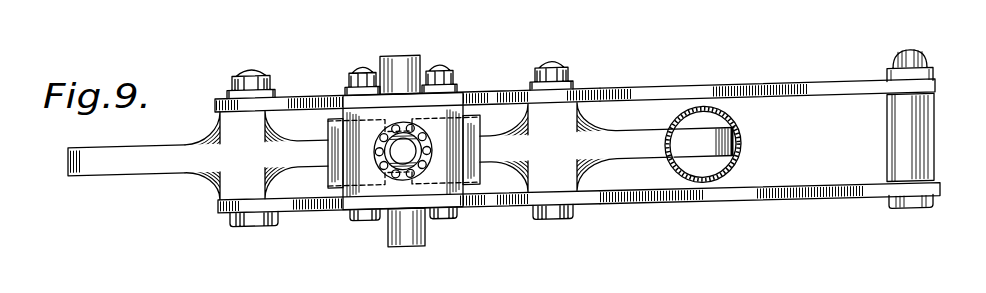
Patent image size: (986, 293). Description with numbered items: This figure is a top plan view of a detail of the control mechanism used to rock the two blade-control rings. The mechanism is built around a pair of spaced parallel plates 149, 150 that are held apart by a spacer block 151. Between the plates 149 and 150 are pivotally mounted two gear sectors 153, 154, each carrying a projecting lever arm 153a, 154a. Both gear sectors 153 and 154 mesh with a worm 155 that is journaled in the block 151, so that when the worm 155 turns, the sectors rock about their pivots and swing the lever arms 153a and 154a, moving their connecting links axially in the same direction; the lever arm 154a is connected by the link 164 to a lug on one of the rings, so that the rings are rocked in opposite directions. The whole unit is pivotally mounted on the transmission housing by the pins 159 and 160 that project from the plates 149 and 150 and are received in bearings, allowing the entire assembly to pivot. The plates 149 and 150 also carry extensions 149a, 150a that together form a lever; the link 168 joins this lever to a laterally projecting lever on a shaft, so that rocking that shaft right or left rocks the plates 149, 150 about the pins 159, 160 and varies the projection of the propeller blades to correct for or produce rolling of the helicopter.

The plate 149 is at (503, 96).
The extension 149a is at (853, 62).
The plate 150 is at (493, 201).
The extension 150a is at (804, 201).
The spacer block 151 is at (447, 120).
The gear sector 153 is at (290, 197).
The lever arm 153a is at (135, 158).
The gear sector 154 is at (567, 168).
The lever arm 154a is at (660, 120).
The worm 155 is at (405, 158).
The pin 159 is at (400, 44).
The pin 160 is at (402, 237).
The link 164 is at (742, 128).
The link 168 is at (935, 136).